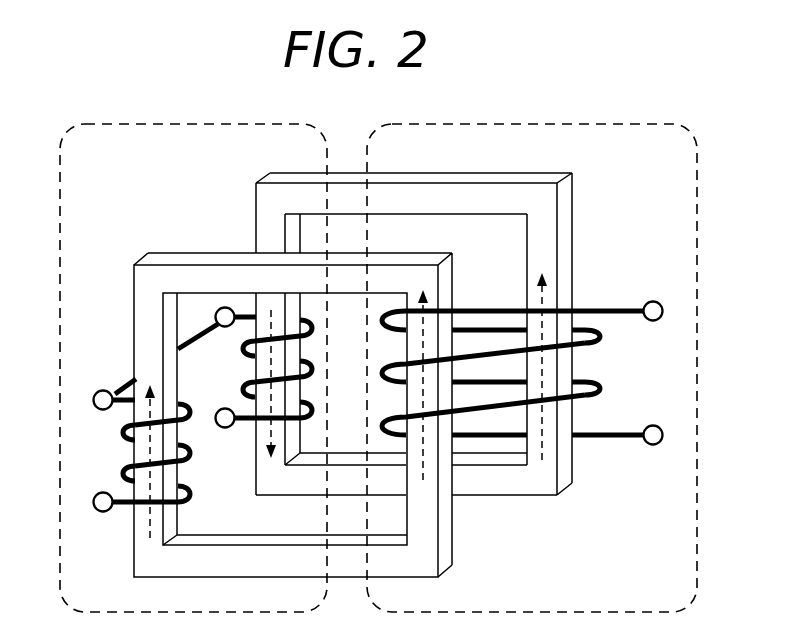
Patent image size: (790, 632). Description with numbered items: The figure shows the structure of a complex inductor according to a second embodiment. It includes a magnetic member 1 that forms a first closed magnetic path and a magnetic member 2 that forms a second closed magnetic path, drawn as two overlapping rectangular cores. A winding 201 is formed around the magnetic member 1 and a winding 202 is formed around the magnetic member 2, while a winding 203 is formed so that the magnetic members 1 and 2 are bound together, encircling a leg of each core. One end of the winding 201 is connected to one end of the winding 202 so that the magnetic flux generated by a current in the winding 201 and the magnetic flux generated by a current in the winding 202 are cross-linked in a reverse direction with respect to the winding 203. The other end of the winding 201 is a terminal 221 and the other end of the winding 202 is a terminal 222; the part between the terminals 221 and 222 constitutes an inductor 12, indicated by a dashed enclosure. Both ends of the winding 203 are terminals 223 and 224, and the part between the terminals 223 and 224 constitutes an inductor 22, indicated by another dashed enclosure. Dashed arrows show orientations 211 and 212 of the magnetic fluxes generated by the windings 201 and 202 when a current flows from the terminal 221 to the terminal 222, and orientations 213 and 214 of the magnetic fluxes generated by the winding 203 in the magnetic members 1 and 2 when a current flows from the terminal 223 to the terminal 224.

The magnetic member 1 is at (146, 258).
The magnetic member 2 is at (258, 181).
The inductor 12 is at (58, 296).
The inductor 22 is at (698, 349).
The winding 201 is at (183, 497).
The winding 202 is at (250, 382).
The winding 203 is at (587, 379).
The orientation of magnetic flux 211 is at (149, 522).
The orientation of magnetic flux 212 is at (268, 432).
The orientation of magnetic flux 213 is at (423, 458).
The orientation of magnetic flux 214 is at (540, 290).
The terminal 221 is at (100, 492).
The terminal 222 is at (218, 410).
The terminal 223 is at (653, 445).
The terminal 224 is at (654, 301).